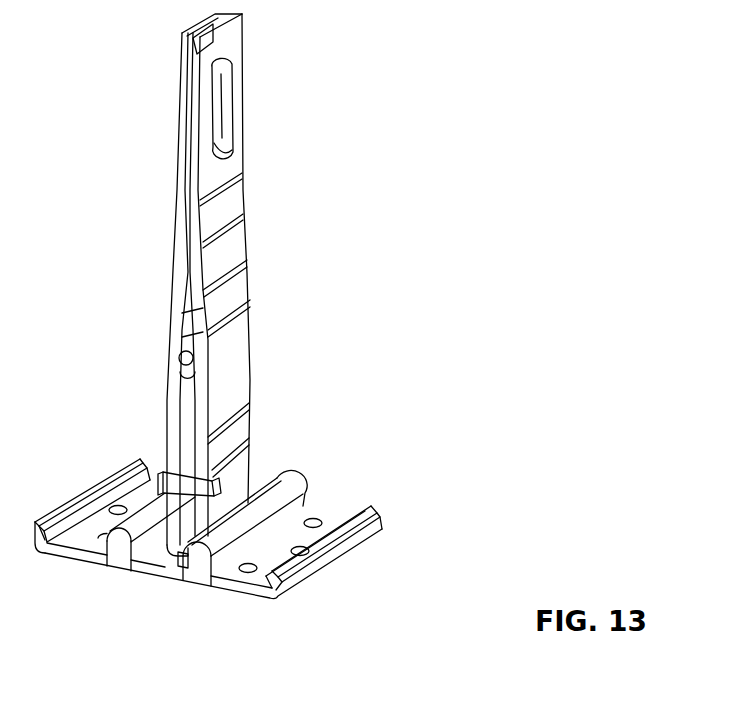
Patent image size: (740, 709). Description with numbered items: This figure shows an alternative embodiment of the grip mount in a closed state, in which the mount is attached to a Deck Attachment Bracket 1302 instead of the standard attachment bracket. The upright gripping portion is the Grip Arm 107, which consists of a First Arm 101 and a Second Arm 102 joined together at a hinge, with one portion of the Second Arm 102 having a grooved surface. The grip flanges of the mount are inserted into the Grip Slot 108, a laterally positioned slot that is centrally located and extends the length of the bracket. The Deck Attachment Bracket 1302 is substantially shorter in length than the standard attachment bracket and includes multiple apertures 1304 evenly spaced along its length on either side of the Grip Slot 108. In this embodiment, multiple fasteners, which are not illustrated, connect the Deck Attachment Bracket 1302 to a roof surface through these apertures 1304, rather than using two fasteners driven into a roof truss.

The first arm 101 is at (260, 277).
The second arm 102 is at (162, 249).
The grip arm 107 is at (275, 149).
The grip slot 108 is at (152, 586).
The deck attachment bracket 1302 is at (362, 561).
The apertures 1304 is at (114, 499).